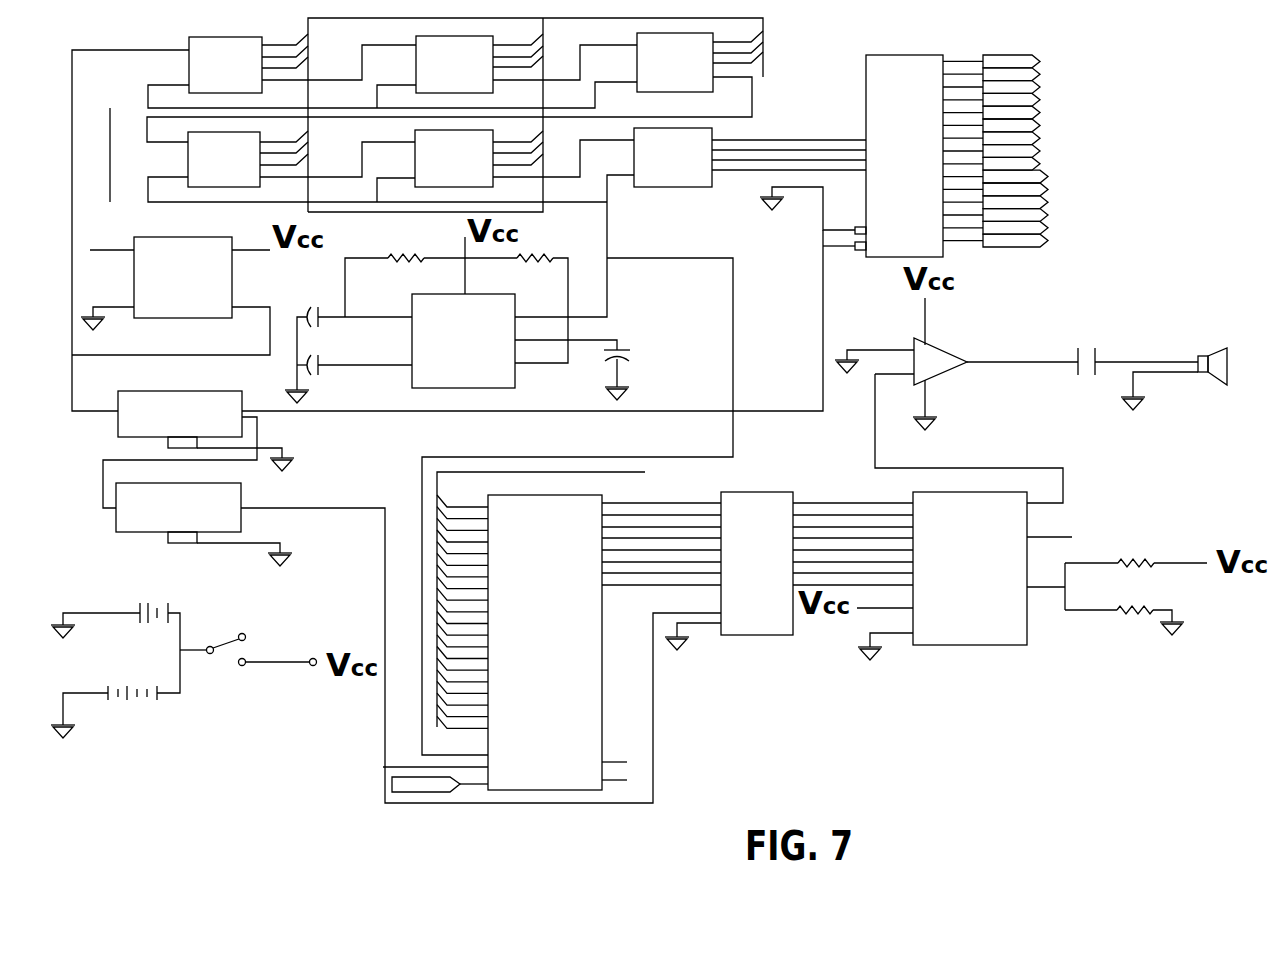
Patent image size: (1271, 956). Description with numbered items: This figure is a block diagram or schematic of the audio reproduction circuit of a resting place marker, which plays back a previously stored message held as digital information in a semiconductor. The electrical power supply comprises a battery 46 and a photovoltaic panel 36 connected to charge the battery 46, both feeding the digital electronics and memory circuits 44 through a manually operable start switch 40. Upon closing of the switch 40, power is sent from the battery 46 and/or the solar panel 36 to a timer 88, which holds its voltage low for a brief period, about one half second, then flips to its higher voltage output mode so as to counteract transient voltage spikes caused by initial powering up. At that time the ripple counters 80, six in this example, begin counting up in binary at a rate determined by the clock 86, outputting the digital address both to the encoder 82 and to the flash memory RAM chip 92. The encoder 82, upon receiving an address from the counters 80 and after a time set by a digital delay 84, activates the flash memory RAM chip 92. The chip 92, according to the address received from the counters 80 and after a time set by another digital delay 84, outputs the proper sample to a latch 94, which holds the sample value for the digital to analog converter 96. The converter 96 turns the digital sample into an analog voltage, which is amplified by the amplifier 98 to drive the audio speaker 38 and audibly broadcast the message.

The ripple counters 80 is at (206, 82).
The encoder 82 is at (885, 182).
The digital delay 84 is at (161, 431).
The clock 86 is at (164, 295).
The timer 88 is at (444, 358).
The flash memory RAM chip 92 is at (526, 657).
The latch 94 is at (738, 587).
The digital to analog converter 96 is at (951, 583).
The amplifier 98 is at (952, 370).
The audio speaker 38 is at (1220, 352).
The digital electronics and memory circuits 44 is at (1075, 297).
The photovoltaic panel 36 is at (147, 603).
The start switch 40 is at (247, 637).
The battery 46 is at (138, 713).